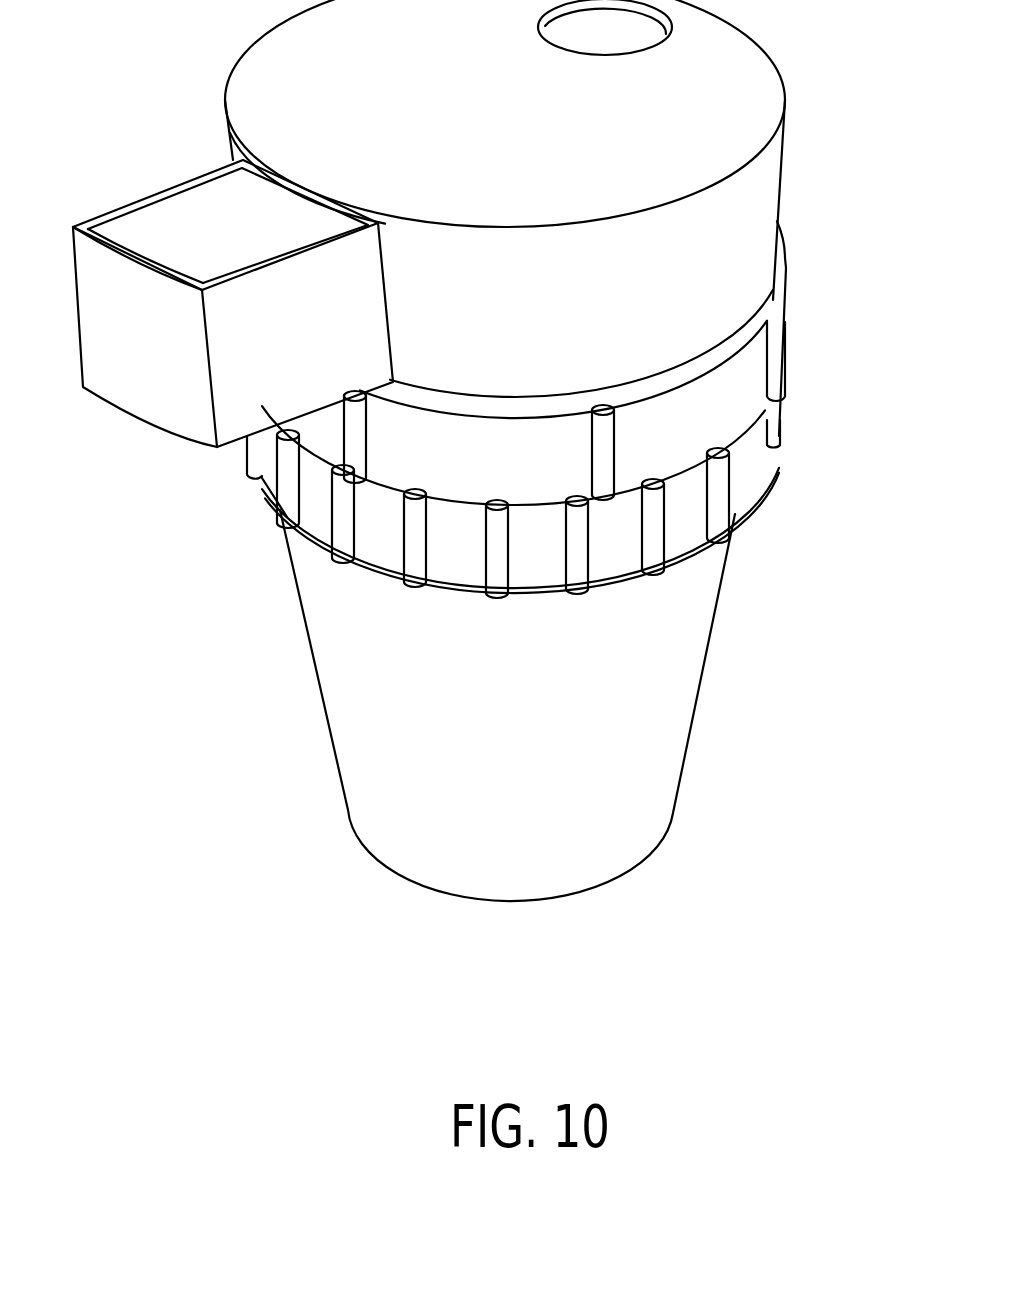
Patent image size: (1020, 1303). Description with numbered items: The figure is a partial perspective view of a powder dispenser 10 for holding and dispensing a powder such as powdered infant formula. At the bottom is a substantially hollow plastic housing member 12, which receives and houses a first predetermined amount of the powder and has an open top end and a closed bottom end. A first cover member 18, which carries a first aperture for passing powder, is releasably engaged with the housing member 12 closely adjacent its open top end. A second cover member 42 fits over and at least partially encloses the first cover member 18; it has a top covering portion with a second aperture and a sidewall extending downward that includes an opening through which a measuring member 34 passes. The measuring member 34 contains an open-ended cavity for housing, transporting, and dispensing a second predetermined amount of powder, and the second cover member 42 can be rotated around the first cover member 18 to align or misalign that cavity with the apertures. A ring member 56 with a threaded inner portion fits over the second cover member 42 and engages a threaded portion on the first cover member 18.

The powder dispenser 10 is at (471, 450).
The housing member 12 is at (687, 638).
The first cover member 18 is at (745, 464).
The measuring member 34 is at (130, 327).
The second cover member 42 is at (713, 97).
The ring member 56 is at (745, 369).